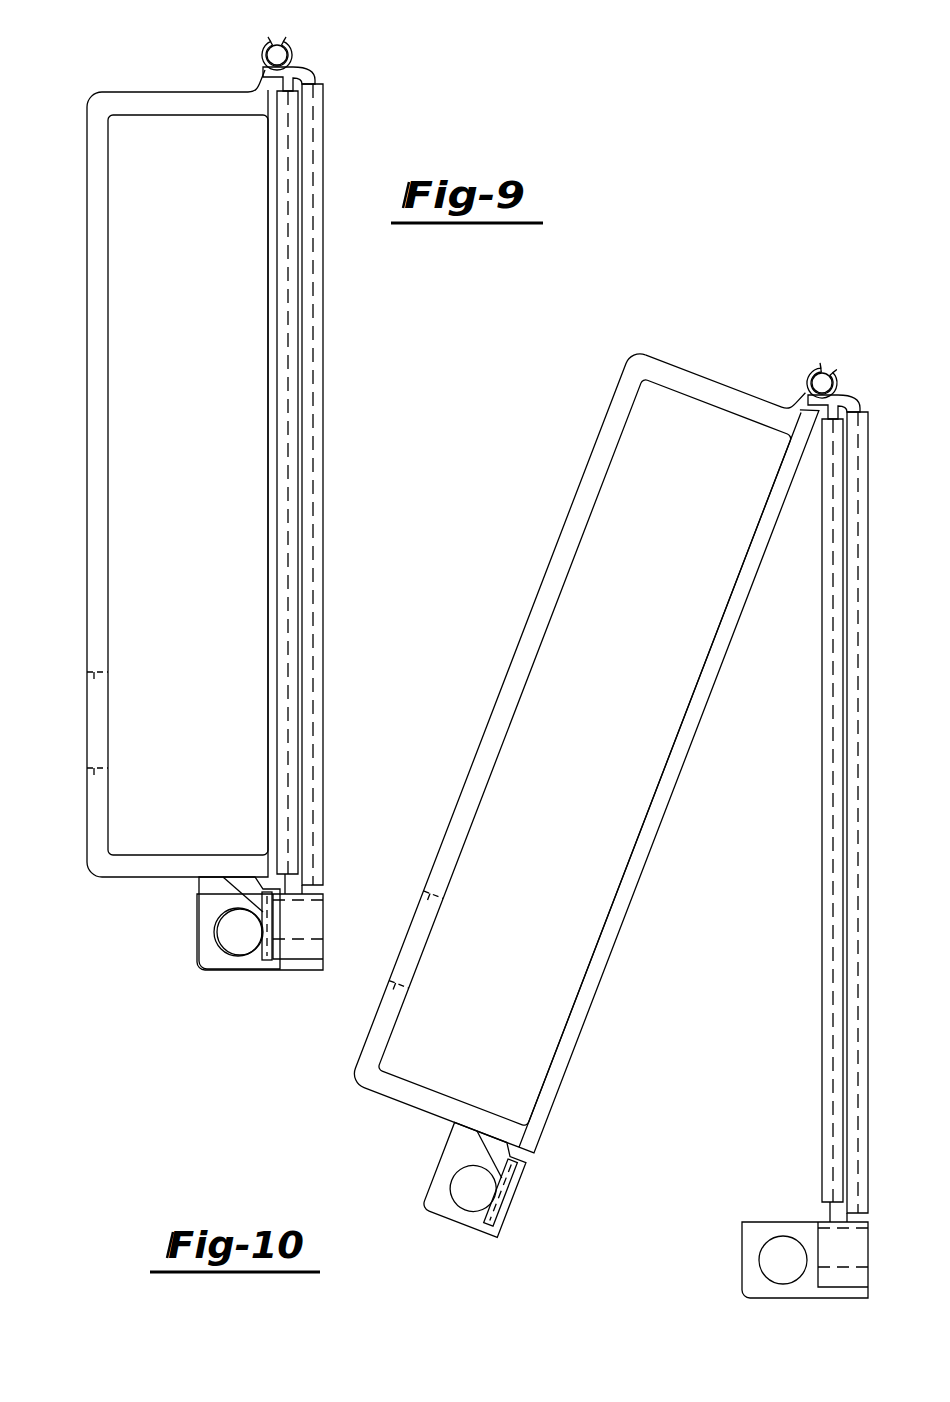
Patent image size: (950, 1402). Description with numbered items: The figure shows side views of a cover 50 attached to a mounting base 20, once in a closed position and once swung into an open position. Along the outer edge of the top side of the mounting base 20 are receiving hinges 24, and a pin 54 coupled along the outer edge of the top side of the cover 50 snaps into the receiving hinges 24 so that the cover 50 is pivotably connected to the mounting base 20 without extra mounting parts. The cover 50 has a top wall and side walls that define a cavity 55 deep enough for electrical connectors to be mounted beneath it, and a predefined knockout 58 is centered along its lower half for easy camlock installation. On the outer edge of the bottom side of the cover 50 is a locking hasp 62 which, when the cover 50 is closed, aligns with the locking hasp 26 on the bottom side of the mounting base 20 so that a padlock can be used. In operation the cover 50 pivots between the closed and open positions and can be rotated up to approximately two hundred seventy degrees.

In FIG. 9, the mounting base 20 is at (324, 302).
In FIG. 10, the mounting base 20 is at (873, 836).
In FIG. 9, the receiving hinges 24 is at (290, 58).
In FIG. 10, the receiving hinges 24 is at (842, 388).
In FIG. 9, the locking hasp 26 is at (260, 932).
In FIG. 10, the locking hasp 26 is at (742, 1246).
In FIG. 9, the cover 50 is at (87, 312).
In FIG. 10, the cover 50 is at (573, 497).
In FIG. 9, the pin 54 is at (287, 36).
In FIG. 10, the pin 54 is at (822, 370).
In FIG. 9, the cavity 55 is at (168, 314).
In FIG. 10, the cavity 55 is at (590, 664).
In FIG. 9, the predefined knockout 58 is at (87, 697).
In FIG. 10, the predefined knockout 58 is at (418, 905).
In FIG. 9, the locking hasp 62 is at (239, 923).
In FIG. 10, the locking hasp 62 is at (434, 1174).